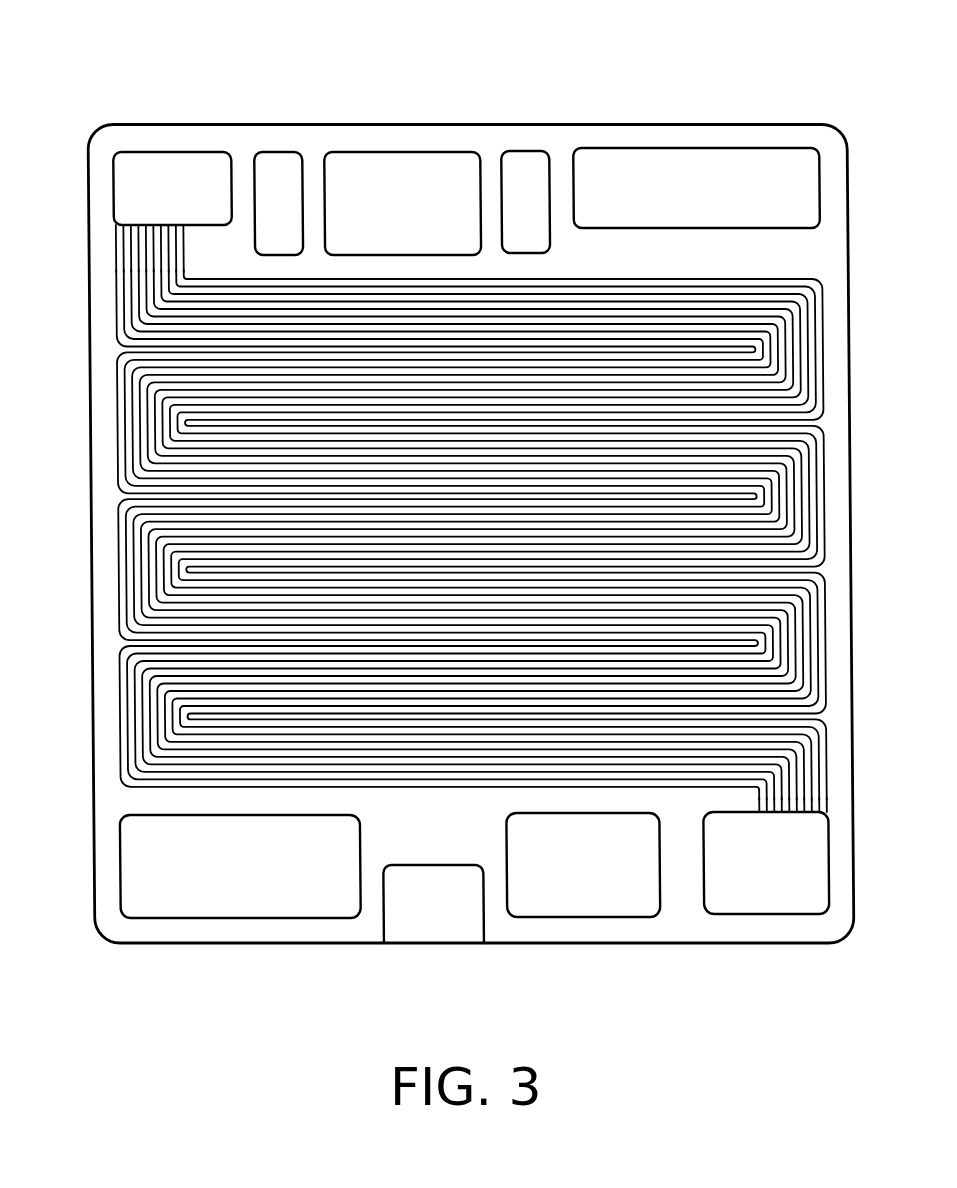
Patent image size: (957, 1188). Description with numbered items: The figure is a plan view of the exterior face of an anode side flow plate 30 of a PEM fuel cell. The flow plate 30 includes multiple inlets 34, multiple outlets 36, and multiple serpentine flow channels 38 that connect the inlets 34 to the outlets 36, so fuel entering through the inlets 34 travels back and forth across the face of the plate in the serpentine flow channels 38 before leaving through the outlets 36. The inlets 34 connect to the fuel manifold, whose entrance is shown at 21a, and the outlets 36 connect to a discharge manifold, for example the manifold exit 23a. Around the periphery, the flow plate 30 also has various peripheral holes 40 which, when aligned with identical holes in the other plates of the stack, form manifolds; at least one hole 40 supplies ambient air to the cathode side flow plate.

The anode side flow plate 30 is at (741, 75).
The discharge manifold exit 23a is at (185, 172).
The fuel manifold entrance 21a is at (795, 893).
The peripheral holes 40 is at (525, 162).
The outlets 36 is at (157, 216).
The inlets 34 is at (774, 828).
The serpentine flow channels 38 is at (786, 348).